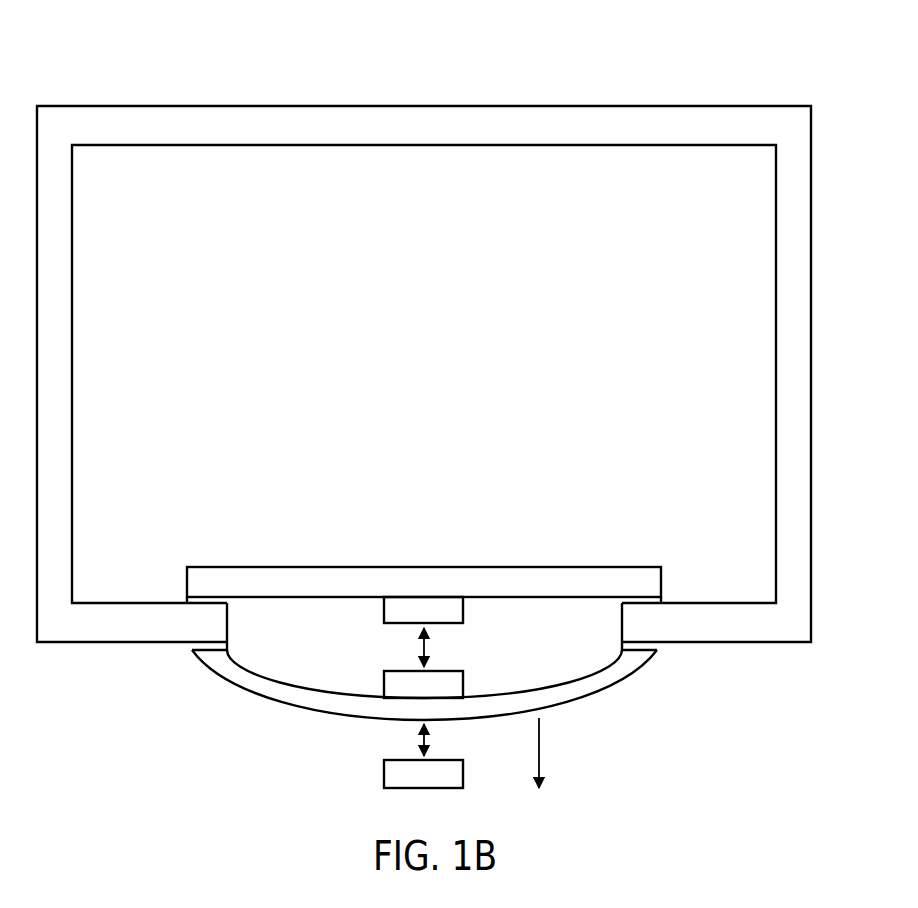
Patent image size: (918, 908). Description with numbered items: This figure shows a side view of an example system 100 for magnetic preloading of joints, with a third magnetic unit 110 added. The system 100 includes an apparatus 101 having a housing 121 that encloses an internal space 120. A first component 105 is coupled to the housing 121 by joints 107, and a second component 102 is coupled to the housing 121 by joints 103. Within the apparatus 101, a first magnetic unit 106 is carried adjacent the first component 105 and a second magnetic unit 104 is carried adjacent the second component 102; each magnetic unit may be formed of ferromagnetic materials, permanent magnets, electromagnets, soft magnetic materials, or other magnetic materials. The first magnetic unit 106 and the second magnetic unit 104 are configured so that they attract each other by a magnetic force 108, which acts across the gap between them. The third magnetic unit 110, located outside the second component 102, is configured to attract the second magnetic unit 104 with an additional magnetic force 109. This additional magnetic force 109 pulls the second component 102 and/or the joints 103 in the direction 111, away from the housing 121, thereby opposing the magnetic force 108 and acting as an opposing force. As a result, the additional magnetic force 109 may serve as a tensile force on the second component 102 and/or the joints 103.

The system 100 is at (583, 80).
The apparatus 101 is at (812, 520).
The second component 102 is at (602, 688).
The joints 103 is at (198, 646).
The second magnetic unit 104 is at (463, 673).
The first component 105 is at (615, 576).
The first magnetic unit 106 is at (392, 608).
The joints 107 is at (190, 600).
The magnetic force 108 is at (420, 652).
The additional magnetic force 109 is at (420, 740).
The third magnetic unit 110 is at (463, 762).
The direction 111 is at (541, 740).
The internal space 120 is at (755, 437).
The housing 121 is at (800, 260).